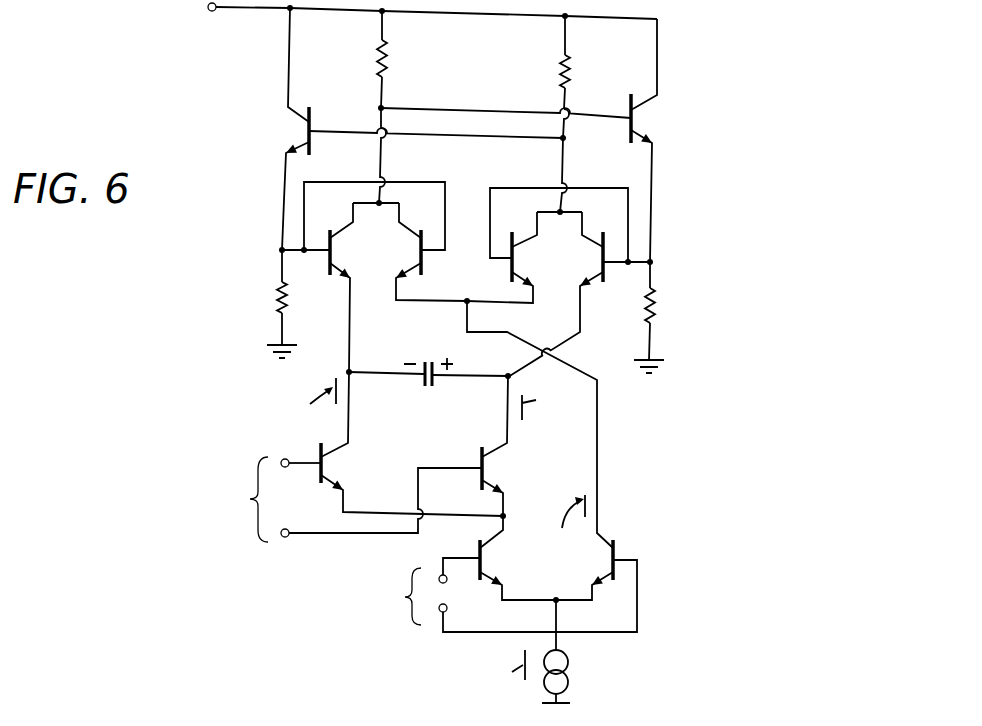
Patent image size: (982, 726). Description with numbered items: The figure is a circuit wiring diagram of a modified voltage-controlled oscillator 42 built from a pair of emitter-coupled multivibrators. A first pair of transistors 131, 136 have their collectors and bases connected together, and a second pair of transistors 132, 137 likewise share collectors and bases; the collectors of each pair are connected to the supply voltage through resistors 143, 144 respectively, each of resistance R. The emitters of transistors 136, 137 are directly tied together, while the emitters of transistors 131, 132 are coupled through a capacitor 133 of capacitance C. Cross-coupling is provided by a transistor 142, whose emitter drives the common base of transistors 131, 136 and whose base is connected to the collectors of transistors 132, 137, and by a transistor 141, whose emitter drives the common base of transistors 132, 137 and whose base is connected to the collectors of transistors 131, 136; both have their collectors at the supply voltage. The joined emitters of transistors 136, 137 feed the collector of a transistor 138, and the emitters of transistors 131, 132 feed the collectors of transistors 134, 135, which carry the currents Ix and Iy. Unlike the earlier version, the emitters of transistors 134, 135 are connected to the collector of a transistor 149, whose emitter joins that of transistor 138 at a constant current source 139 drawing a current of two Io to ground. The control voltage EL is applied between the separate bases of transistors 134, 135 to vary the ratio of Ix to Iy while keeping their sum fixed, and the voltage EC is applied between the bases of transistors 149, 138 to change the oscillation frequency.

The voltage-controlled oscillator 42 is at (224, 265).
The resistor 143 is at (379, 60).
The resistor 144 is at (571, 72).
The transistor 142 is at (312, 148).
The transistor 141 is at (627, 132).
The transistor 131 is at (320, 262).
The transistor 136 is at (416, 278).
The transistor 137 is at (508, 272).
The transistor 132 is at (607, 270).
The capacitor 133 is at (430, 388).
The transistor 134 is at (312, 474).
The transistor 135 is at (478, 476).
The transistor 149 is at (474, 583).
The transistor 138 is at (620, 576).
The constant current source 139 is at (569, 676).